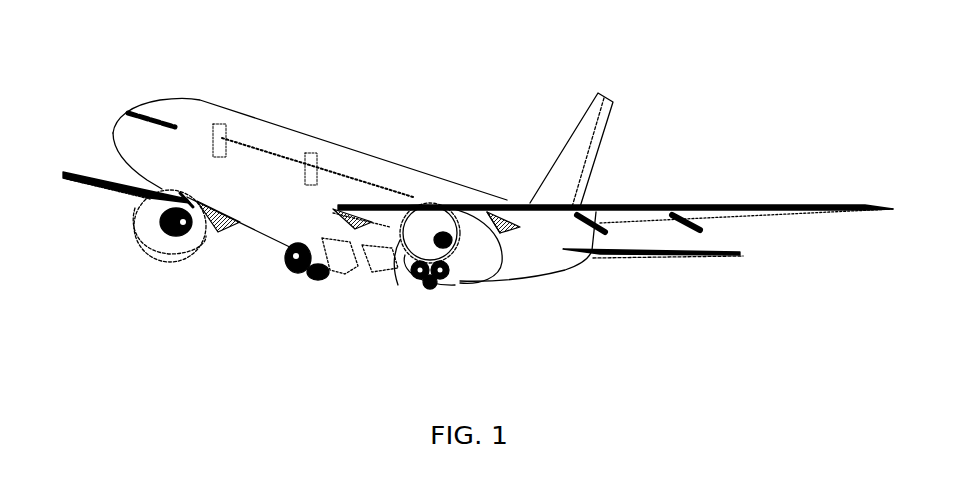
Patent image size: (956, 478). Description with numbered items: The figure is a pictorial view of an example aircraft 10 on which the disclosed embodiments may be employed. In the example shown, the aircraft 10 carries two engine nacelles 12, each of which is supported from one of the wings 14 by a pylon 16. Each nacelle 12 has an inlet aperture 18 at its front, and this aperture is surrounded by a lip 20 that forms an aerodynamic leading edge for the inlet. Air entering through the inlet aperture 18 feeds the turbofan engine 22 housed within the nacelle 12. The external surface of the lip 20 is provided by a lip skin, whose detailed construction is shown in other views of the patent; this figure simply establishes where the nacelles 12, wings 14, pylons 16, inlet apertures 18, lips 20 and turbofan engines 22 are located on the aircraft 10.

The aircraft 10 is at (199, 99).
The engine nacelle 12 is at (200, 227).
The wing 14 is at (103, 180).
The pylon 16 is at (517, 240).
The inlet aperture 18 is at (150, 215).
The lip 20 is at (147, 247).
The turbofan engine 22 is at (435, 287).